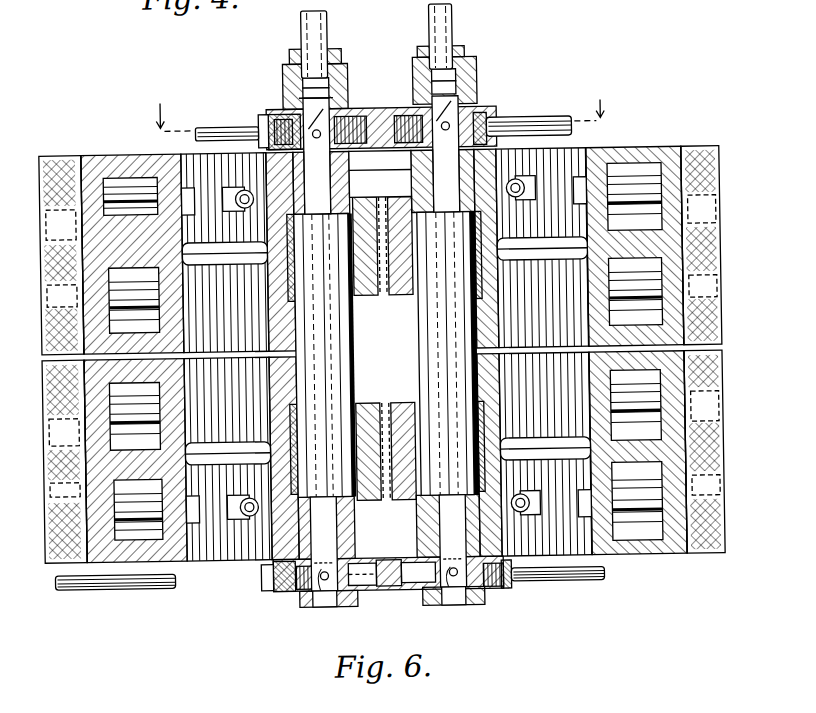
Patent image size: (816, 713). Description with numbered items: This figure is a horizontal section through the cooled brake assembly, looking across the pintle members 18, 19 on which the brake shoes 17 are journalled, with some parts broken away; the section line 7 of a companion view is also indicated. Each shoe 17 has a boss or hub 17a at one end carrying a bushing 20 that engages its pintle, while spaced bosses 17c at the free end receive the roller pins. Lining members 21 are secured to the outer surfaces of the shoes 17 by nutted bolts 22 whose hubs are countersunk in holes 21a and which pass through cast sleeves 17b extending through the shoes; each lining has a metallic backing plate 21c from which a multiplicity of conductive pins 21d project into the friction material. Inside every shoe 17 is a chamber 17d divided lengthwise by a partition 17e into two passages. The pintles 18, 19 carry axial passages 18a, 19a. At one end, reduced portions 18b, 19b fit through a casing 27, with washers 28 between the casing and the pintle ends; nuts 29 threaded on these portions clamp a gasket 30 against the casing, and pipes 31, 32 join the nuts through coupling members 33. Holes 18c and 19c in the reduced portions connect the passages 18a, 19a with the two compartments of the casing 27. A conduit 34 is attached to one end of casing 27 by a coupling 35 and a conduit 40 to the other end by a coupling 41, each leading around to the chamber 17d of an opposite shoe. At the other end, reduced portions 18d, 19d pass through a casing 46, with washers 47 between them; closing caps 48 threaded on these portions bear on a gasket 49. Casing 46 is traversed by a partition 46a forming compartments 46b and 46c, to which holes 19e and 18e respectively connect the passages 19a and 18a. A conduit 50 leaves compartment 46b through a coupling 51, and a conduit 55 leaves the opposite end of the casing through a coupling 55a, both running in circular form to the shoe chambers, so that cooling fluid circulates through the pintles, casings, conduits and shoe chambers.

The section line 7- 7 is at (380, 105).
The brake shoes 17 is at (640, 567).
The bosses or hubs 17a is at (408, 294).
The cast hubs or sleeves 17b is at (152, 214).
The spaced bosses 17c is at (154, 472).
The chamber 17d is at (112, 290).
The partition 17e is at (152, 260).
The pintle member 18 is at (422, 361).
The bore or passage 18a is at (446, 182).
The reduced portion 18b is at (472, 80).
The holes 18c is at (472, 96).
The reduced portion 18d is at (462, 606).
The holes 18e is at (446, 608).
The pintle member 19 is at (338, 337).
The bore or passage 19a is at (322, 197).
The reduced portion 19b is at (333, 86).
The holes 19c is at (335, 101).
The reduced portion 19d is at (338, 598).
The holes 19e is at (316, 608).
The bushing 20 is at (290, 248).
The bearing members or linings 21 is at (58, 152).
The holes 21a is at (722, 197).
The metallic backing plate 21c is at (684, 150).
The pins 21d is at (50, 467).
The nutted bolts 22 is at (518, 200).
The casing 27 is at (364, 150).
The washers 28 is at (352, 168).
The nuts 29 is at (352, 68).
The packing plate or gasket 30 is at (286, 113).
The pipe or conduit 31 is at (452, 12).
The pipe or conduit 32 is at (314, 30).
The coupling members 33 is at (345, 50).
The conduit 34 is at (220, 125).
The coupling 35 is at (262, 117).
The conduit 40 is at (545, 120).
The coupling 41 is at (505, 118).
The casing 46 is at (390, 590).
The partition 46a is at (362, 572).
The compartment 46b is at (356, 560).
The compartment 46c is at (412, 562).
The washers 47 is at (400, 560).
The closing caps 48 is at (354, 604).
The gasket or packing plate 49 is at (290, 592).
The conduit 50 is at (536, 584).
The coupling 51 is at (506, 592).
The conduit 55 is at (190, 587).
The coupling 55a is at (264, 590).